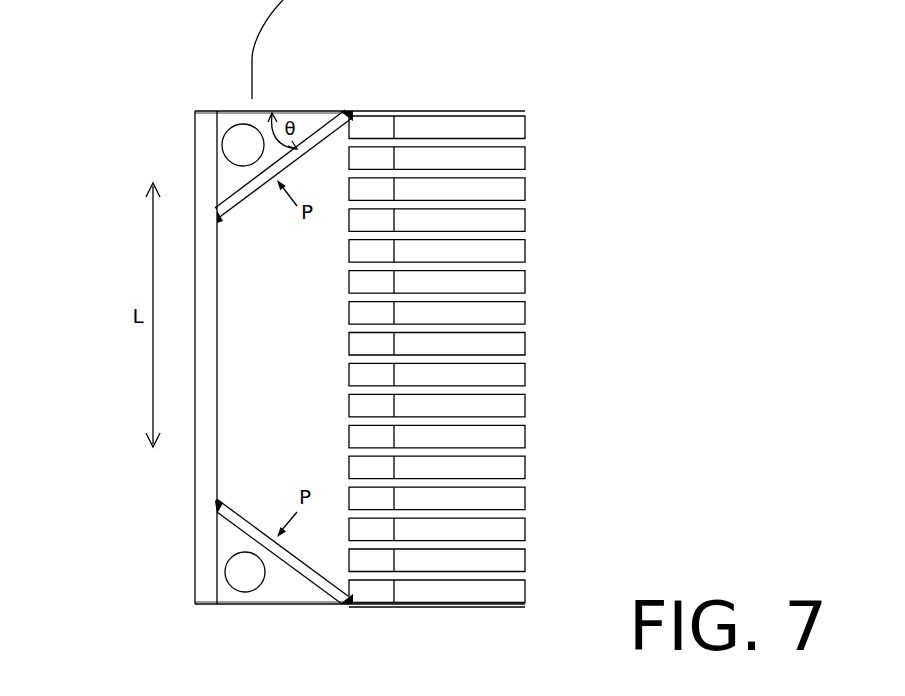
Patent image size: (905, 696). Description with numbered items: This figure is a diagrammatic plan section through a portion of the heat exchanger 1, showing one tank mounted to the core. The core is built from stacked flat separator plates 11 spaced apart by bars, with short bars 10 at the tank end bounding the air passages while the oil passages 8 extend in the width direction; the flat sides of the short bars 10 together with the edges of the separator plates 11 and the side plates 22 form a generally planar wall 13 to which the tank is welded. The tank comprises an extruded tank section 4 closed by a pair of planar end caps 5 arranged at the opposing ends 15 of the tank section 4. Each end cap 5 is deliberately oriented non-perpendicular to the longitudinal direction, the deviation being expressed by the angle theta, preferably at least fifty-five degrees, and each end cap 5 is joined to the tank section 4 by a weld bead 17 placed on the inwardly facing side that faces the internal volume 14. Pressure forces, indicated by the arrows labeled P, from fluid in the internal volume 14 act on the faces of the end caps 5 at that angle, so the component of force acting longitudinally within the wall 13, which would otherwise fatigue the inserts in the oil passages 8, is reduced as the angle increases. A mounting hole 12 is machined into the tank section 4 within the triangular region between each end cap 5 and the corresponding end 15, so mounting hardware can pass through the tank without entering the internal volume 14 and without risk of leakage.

The heat exchanger 1 is at (448, 338).
The extruded tank section 4 is at (196, 143).
The planar end caps 5 is at (325, 126).
The oil passages 8 is at (349, 296).
The short bars 10 is at (383, 593).
The separator plates 11 is at (513, 393).
The mounting holes 12 is at (236, 127).
The wall 13 is at (349, 192).
The internal volume 14 is at (242, 462).
The ends 15 is at (195, 112).
The weld bead 17 is at (222, 228).
The side plates 22 is at (438, 110).